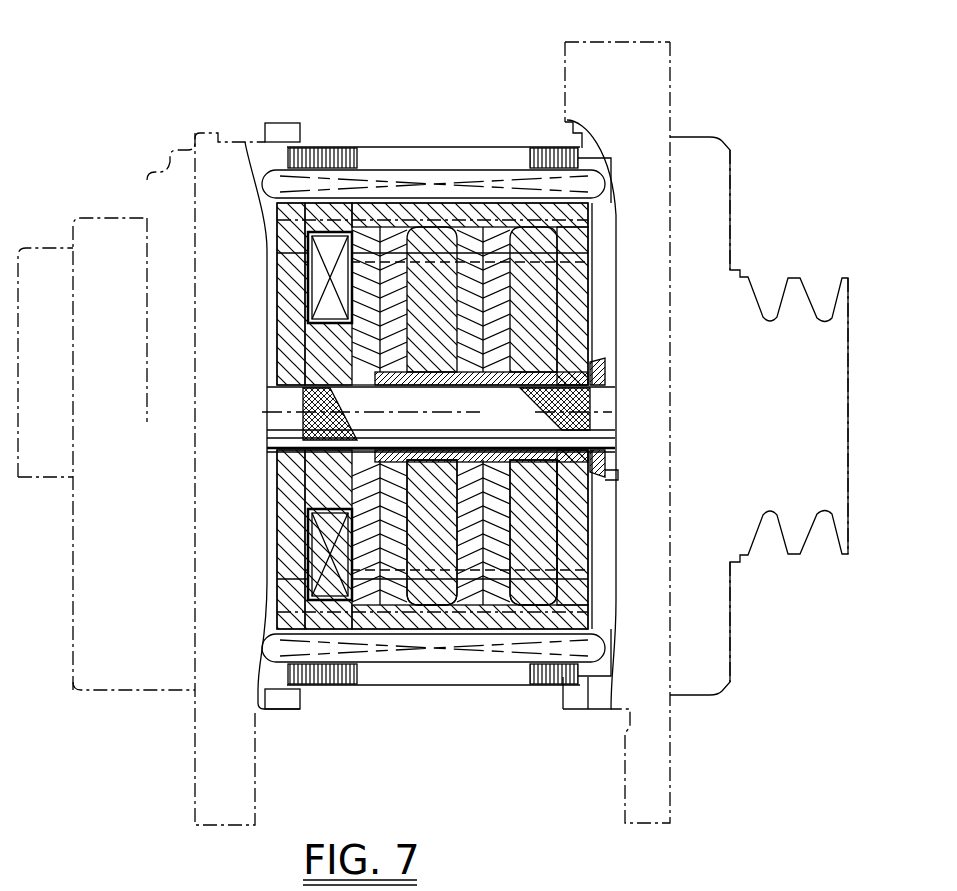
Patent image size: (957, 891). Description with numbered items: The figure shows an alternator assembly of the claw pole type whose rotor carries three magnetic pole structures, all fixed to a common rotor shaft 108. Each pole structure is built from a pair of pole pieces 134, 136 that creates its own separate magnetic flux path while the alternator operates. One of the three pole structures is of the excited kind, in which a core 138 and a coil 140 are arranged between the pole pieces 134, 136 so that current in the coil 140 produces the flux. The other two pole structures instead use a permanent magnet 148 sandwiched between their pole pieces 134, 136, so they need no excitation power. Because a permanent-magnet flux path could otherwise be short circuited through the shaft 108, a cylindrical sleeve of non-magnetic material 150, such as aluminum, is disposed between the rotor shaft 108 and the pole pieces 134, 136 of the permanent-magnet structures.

The rotor shaft 108 is at (527, 423).
The pole piece 134 is at (305, 320).
The pole piece 136 is at (365, 347).
The core 138 is at (310, 474).
The coil 140 is at (318, 272).
The permanent magnet 148 is at (437, 572).
The cylindrical sleeve of non-magnetic material 150 is at (590, 378).